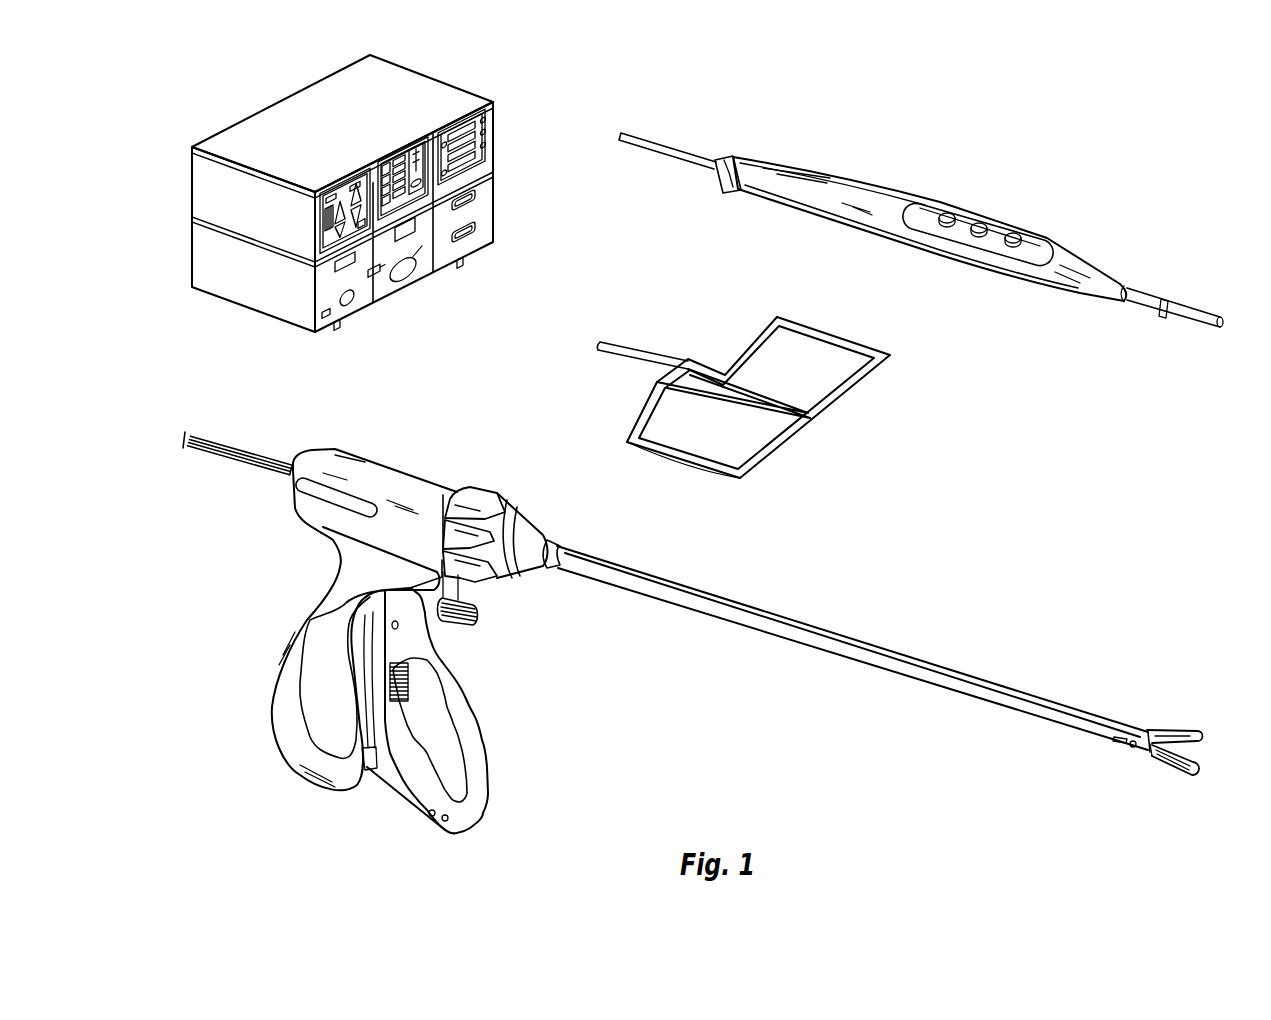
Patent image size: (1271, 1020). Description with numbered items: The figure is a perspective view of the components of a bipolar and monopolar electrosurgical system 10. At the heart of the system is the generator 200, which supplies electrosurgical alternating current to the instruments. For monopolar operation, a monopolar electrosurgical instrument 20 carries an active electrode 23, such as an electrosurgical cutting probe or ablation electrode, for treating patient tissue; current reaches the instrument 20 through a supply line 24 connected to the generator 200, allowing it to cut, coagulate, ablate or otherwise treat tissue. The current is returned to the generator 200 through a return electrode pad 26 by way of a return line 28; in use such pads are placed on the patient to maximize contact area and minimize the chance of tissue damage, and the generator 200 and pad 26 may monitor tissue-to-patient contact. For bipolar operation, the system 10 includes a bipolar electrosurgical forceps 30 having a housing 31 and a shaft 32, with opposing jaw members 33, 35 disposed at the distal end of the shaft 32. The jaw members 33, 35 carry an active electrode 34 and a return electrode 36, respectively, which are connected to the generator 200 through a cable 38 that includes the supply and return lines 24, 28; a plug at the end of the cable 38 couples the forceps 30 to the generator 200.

The electrosurgical system 10 is at (998, 130).
The generator 200 is at (282, 78).
The monopolar electrosurgical instrument 20 is at (969, 241).
The active electrode 23 is at (1190, 305).
The supply line 24 is at (667, 145).
The return electrode pad 26 is at (688, 462).
The return line 28 is at (630, 345).
The bipolar electrosurgical forceps 30 is at (768, 621).
The housing 31 is at (400, 462).
The shaft 32 is at (848, 630).
The jaw member 33 is at (1189, 743).
The active electrode 34 is at (1196, 745).
The jaw member 35 is at (1178, 778).
The return electrode 36 is at (1195, 758).
The cable 38 is at (262, 455).